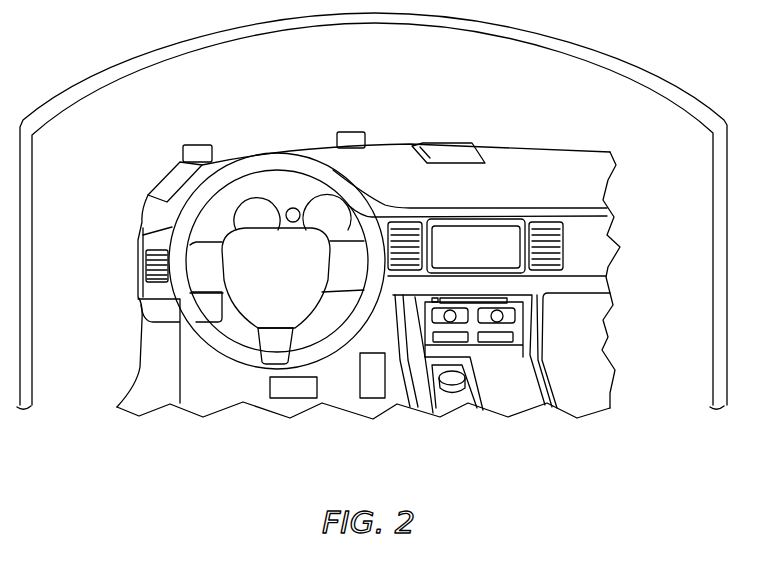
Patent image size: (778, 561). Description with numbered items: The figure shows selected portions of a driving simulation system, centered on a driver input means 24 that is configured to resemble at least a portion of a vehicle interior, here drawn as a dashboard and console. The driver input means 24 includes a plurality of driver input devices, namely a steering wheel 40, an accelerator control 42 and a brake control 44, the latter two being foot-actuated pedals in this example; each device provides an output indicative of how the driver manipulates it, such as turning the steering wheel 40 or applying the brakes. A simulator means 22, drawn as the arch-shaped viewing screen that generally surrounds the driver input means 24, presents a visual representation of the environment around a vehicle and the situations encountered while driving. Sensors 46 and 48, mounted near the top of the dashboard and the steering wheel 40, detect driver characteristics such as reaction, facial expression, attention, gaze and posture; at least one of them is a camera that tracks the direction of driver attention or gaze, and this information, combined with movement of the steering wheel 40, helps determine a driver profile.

The simulator means 22 is at (330, 75).
The driver input means 24 is at (200, 433).
The steering wheel 40 is at (255, 160).
The accelerator control 42 is at (375, 392).
The brake control 44 is at (290, 392).
The sensor 46 is at (357, 132).
The sensor 48 is at (195, 145).